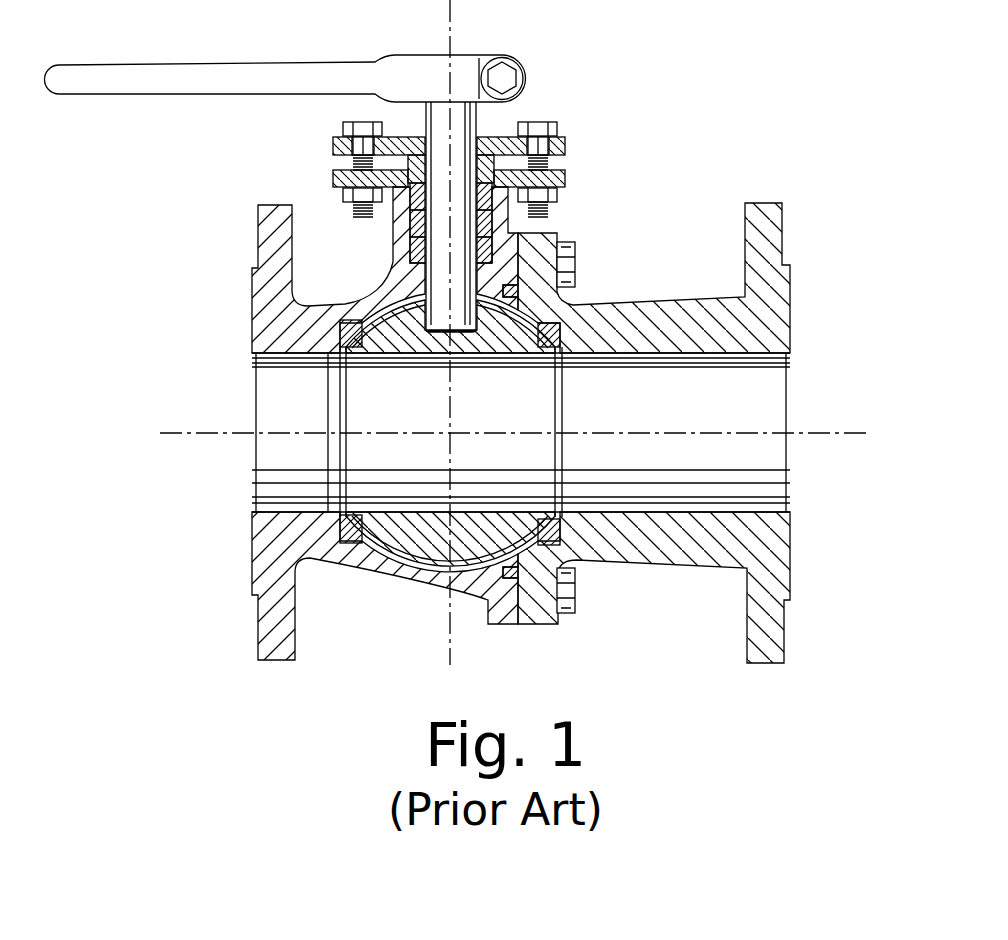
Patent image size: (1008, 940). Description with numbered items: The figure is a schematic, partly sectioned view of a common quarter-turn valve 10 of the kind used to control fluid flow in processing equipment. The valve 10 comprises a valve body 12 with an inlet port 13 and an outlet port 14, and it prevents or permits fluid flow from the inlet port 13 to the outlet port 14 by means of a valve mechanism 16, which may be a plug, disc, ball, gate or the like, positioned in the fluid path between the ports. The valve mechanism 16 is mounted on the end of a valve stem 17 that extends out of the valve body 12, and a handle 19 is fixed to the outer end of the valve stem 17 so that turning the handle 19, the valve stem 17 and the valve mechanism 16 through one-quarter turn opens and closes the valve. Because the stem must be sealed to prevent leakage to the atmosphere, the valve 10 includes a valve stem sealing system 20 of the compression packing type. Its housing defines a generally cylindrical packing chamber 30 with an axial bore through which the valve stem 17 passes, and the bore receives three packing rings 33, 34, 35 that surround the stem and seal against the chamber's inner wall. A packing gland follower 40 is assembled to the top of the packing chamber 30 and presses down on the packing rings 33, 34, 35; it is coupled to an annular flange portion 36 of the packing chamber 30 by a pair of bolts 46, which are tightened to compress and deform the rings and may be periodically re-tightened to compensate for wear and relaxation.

The quarter-turn valve 10 is at (778, 82).
The valve body 12 is at (612, 533).
The inlet port 13 is at (820, 398).
The outlet port 14 is at (222, 398).
The valve mechanism 16 is at (427, 527).
The valve stem 17 is at (458, 127).
The handle 19 is at (220, 70).
The valve stem sealing system 20 is at (608, 178).
The packing chamber 30 is at (500, 211).
The packing ring 33 is at (410, 196).
The packing ring 34 is at (410, 222).
The packing ring 35 is at (410, 250).
The annular flange portion 36 is at (335, 177).
The packing gland follower 40 is at (333, 146).
The bolts 46 is at (345, 128).